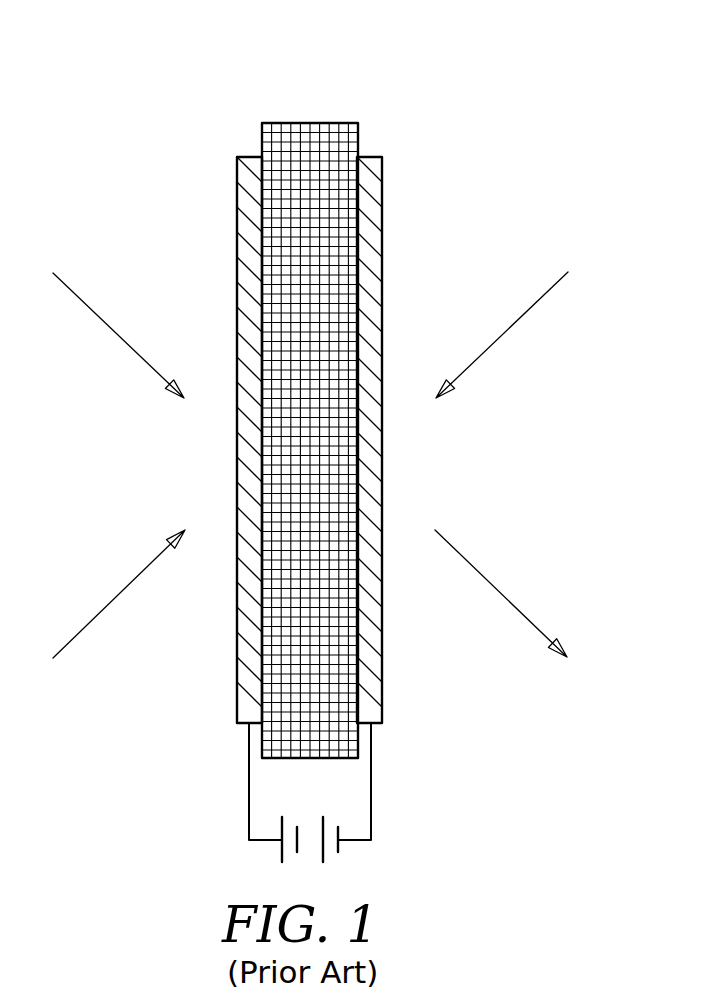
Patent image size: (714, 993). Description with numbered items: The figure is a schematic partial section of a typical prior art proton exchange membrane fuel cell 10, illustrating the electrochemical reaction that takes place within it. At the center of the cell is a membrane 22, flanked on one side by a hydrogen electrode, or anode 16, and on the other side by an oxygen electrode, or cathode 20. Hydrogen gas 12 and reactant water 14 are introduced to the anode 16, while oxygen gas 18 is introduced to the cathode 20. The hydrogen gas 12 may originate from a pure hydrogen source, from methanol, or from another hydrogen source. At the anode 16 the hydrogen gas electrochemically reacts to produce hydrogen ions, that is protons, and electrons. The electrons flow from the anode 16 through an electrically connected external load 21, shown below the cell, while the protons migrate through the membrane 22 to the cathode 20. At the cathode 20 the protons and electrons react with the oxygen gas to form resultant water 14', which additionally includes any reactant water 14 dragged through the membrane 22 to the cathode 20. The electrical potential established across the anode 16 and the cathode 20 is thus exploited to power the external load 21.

The proton exchange membrane fuel cell 10 is at (363, 93).
The hydrogen gas 12 is at (130, 352).
The reactant water 14 is at (117, 607).
The resultant water 14' is at (502, 609).
The hydrogen electrode (anode) 16 is at (240, 157).
The oxygen gas 18 is at (492, 345).
The oxygen electrode (cathode) 20 is at (382, 157).
The external load 21 is at (372, 787).
The membrane 22 is at (285, 123).